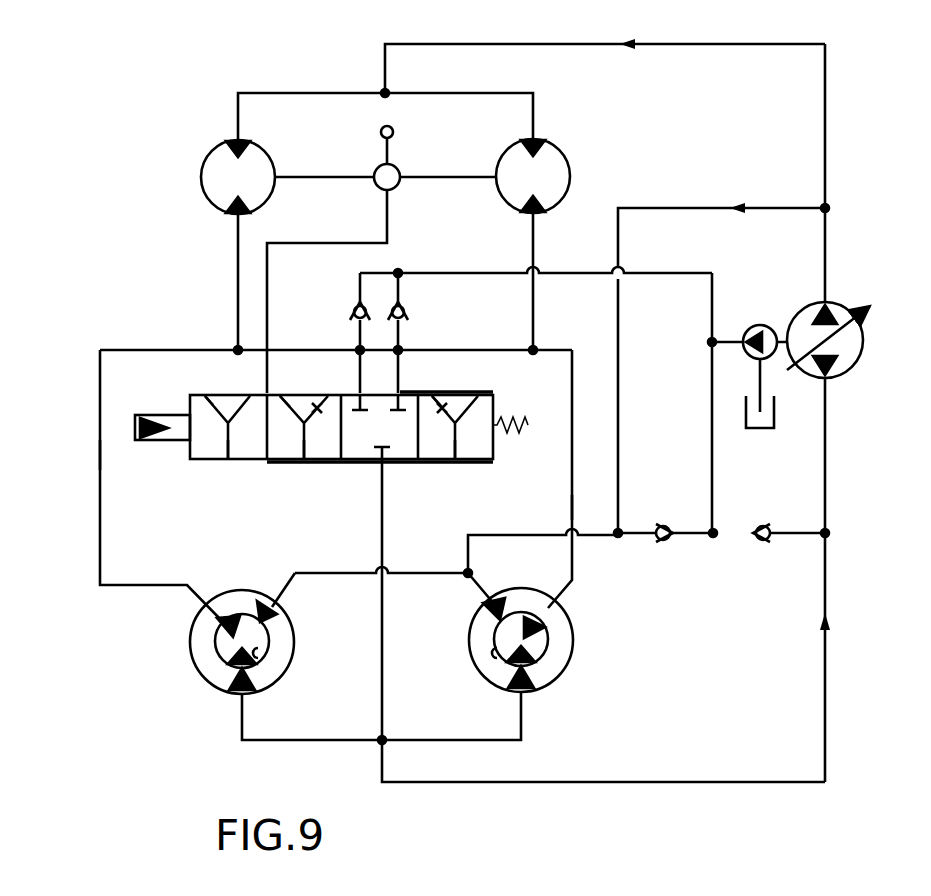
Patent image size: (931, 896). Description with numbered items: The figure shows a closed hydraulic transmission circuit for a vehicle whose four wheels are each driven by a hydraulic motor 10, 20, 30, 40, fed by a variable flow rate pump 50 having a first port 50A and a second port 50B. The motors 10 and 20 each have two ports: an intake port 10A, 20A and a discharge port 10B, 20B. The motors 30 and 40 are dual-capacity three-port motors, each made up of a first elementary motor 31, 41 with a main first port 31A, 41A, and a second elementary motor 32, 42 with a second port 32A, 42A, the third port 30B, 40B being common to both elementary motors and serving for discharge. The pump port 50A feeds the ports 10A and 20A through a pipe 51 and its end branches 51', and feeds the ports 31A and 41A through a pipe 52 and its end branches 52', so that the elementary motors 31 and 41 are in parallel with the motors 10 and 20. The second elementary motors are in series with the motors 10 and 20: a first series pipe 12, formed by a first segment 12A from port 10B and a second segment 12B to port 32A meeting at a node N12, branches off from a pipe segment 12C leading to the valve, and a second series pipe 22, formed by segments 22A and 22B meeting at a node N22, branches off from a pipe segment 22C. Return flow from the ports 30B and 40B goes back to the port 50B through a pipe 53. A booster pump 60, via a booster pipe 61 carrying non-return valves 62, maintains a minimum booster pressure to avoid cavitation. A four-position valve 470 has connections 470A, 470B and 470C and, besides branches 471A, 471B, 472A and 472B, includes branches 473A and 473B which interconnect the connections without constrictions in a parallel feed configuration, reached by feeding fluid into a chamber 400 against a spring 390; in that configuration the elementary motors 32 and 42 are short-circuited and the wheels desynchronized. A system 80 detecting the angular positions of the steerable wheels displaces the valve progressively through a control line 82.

The pipe 51 is at (605, 48).
The end branches 51' is at (385, 98).
The hydraulic motor 10 is at (210, 178).
The port 10A is at (245, 150).
The second port 10B is at (247, 212).
The system for detecting the angular positions of the steerable wheels 80 is at (412, 186).
The control line 82 is at (268, 292).
The hydraulic motor 20 is at (555, 177).
The port 20A is at (537, 150).
The second port 20B is at (540, 212).
The pipe 52 is at (723, 351).
The first segment 22A is at (538, 320).
The first segment 12A is at (237, 300).
The node N12 is at (235, 348).
The pipe segment 12C is at (278, 348).
The pipe segment 22C is at (468, 348).
The node N22 is at (531, 354).
The first series pipe 12 is at (90, 388).
The second segment 12B is at (98, 457).
The second series pipe 22 is at (578, 403).
The second segment 22B is at (570, 512).
The non-return valves 62 is at (406, 314).
The booster pipe 61 is at (712, 308).
The booster pump 60 is at (773, 323).
The pump 50 is at (852, 342).
The first port 50A is at (832, 306).
The port 50B is at (828, 370).
The valve 470 is at (257, 395).
The connection 470A is at (350, 395).
The connection 470B is at (410, 394).
The connection 470C is at (393, 458).
The chamber 400 is at (153, 414).
The spring 390 is at (524, 440).
The end branches 52' is at (445, 568).
The pipe 53 is at (687, 785).
The hydraulic motor 30 is at (165, 690).
The first elementary motor 31 is at (242, 592).
The main first port 31A is at (278, 611).
The second port 32A is at (220, 625).
The second elementary motor 32 is at (265, 656).
The third port 30B is at (238, 692).
The hydraulic motor 40 is at (583, 656).
The first elementary motor 41 is at (573, 641).
The main first port 41A is at (488, 605).
The second port 42A is at (548, 627).
The second elementary motor 42 is at (493, 648).
The third port 40B is at (530, 697).
The branch 473A is at (215, 410).
The branch 473B is at (228, 430).
The branch 472A is at (292, 407).
The branch 472B is at (320, 412).
The branch 471A is at (445, 412).
The branch 471B is at (448, 405).